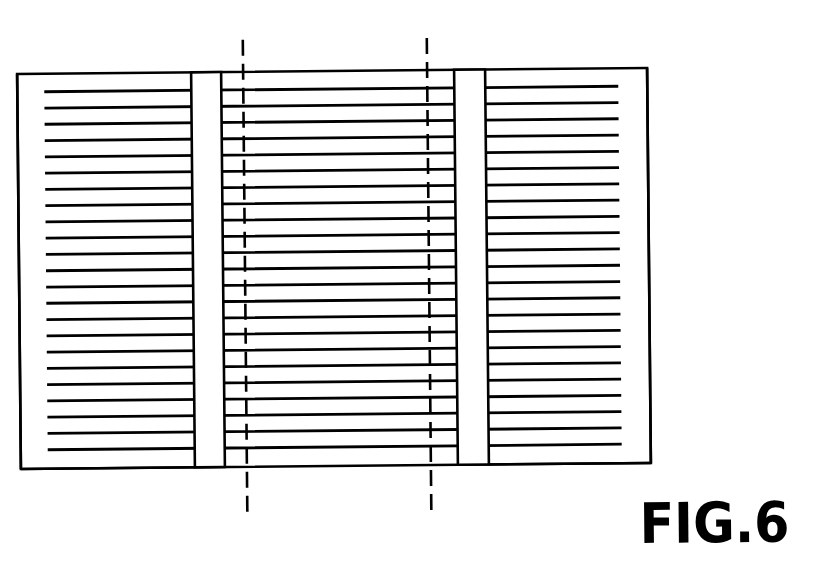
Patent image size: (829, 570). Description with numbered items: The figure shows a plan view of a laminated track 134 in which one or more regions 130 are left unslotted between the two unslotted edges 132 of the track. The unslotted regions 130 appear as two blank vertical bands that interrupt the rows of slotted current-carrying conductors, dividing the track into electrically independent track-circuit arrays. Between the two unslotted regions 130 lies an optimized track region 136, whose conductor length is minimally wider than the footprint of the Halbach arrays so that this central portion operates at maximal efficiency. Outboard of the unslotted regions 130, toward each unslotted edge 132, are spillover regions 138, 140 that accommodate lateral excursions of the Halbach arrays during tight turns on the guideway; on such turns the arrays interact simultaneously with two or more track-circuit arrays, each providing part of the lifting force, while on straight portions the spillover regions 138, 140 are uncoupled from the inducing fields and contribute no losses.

The unslotted region 130 is at (207, 74).
The unslotted edge 132 is at (33, 74).
The laminated track 134 is at (676, 45).
The optimized track region 136 is at (430, 484).
The spillover region 138 is at (620, 474).
The spillover region 140 is at (47, 469).